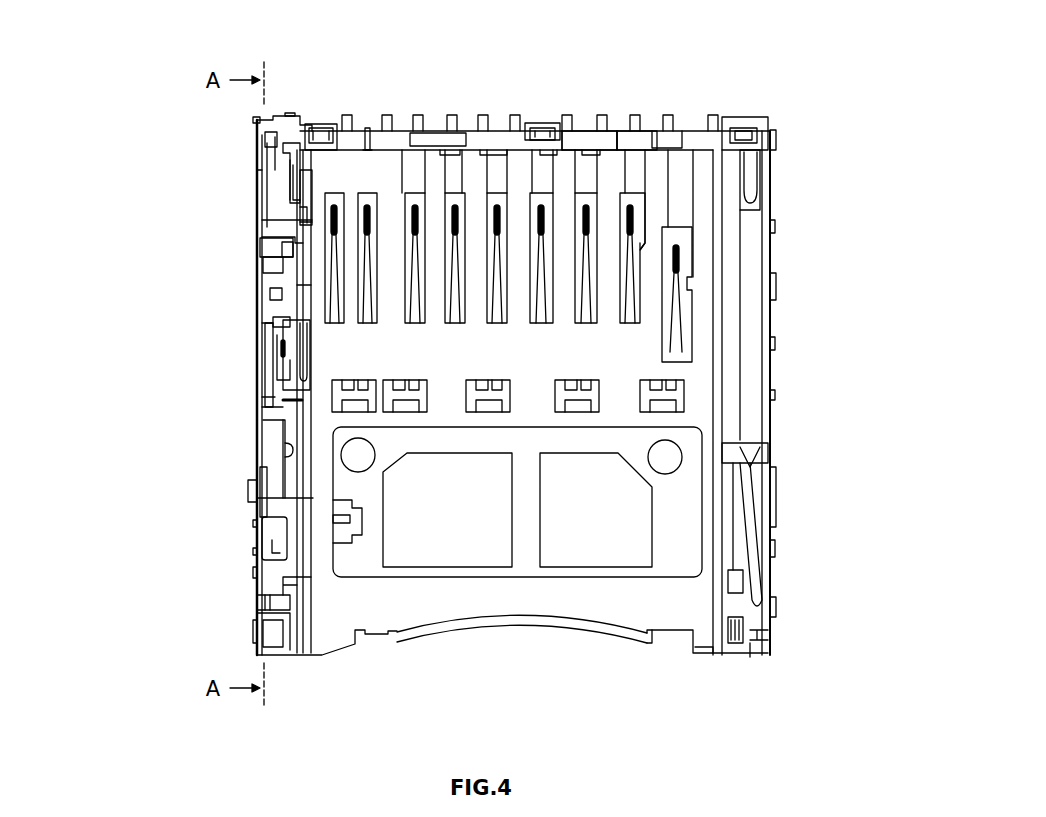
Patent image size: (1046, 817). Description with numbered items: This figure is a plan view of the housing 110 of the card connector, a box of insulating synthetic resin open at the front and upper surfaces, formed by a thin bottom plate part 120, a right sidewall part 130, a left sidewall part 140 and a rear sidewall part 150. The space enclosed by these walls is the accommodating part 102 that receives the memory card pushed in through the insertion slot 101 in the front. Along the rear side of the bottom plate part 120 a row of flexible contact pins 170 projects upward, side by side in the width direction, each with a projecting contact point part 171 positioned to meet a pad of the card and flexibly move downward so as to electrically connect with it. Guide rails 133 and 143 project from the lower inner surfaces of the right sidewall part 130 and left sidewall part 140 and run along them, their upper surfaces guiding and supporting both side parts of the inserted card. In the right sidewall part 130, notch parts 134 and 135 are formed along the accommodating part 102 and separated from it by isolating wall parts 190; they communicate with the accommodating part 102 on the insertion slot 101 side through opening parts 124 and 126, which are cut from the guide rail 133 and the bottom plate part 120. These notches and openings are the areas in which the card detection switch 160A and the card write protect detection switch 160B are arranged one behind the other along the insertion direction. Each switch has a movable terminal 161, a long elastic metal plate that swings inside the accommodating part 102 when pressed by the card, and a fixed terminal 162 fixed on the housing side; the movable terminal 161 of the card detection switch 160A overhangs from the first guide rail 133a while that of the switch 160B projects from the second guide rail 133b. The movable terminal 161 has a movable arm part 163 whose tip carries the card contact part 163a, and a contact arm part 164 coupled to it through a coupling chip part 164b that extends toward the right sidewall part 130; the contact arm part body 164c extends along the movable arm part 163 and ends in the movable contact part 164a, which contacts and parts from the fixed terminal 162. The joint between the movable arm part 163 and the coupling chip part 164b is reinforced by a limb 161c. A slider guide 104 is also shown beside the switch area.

The housing 110 is at (436, 124).
The insertion slot 101 is at (317, 640).
The accommodating part 102 is at (693, 607).
The slider guide 104 is at (275, 370).
The bottom plate part 120 is at (523, 606).
The opening part 124 is at (303, 244).
The opening part 126 is at (290, 448).
The right sidewall part 130 is at (273, 498).
The guide rail 133 is at (360, 387).
The first guide rail 133a is at (312, 285).
The second guide rail 133b is at (303, 578).
The notch part 134 is at (292, 163).
The notch part 135 is at (270, 412).
The left sidewall part 140 is at (752, 335).
The guide rail 143 is at (720, 537).
The rear sidewall part 150 is at (577, 132).
The card detection switch 160A is at (118, 133).
The card write protect detection switch 160B is at (160, 335).
The movable terminal 161 is at (166, 188).
The limb 161c is at (307, 223).
The fixed terminal 162 is at (259, 150).
The movable arm part 163 is at (302, 247).
The card contact part 163a is at (299, 193).
The contact arm part 164 is at (267, 187).
The movable contact part 164a is at (270, 146).
The coupling chip part 164b is at (302, 191).
The contact arm part body 164c is at (257, 172).
The contact pin 170 is at (637, 290).
The contact point part 171 is at (632, 213).
The isolating wall part 190 is at (369, 127).